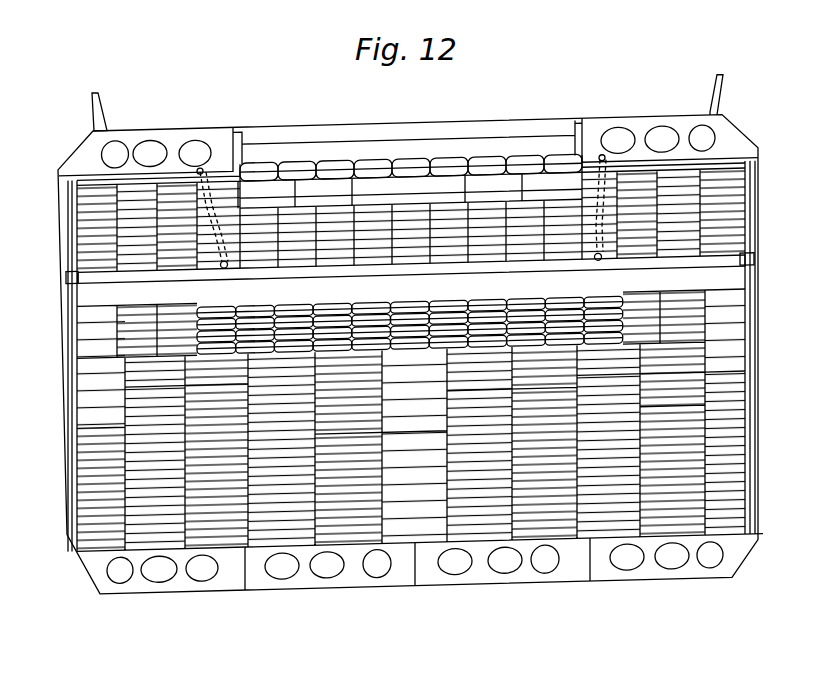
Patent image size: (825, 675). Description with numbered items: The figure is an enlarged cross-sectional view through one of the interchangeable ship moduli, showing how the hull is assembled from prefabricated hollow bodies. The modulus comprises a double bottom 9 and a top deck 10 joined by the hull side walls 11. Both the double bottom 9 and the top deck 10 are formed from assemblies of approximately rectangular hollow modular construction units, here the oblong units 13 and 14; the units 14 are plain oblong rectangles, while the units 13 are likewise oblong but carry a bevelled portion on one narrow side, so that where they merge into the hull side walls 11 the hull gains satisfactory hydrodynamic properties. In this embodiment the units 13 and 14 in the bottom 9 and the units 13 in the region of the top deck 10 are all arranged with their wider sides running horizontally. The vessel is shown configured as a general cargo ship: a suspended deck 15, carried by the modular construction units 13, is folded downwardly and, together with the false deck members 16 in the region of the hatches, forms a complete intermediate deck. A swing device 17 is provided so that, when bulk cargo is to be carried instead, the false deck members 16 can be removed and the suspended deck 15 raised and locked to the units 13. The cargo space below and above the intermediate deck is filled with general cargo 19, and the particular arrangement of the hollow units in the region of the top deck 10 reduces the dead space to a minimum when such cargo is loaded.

The double bottom 9 is at (265, 615).
The top deck 10 is at (149, 118).
The hull side walls 11 is at (68, 415).
The hollow modular construction unit 13 is at (88, 158).
The hollow modular construction unit 14 is at (352, 582).
The suspended deck 15 is at (90, 278).
The false deck members 16 is at (467, 268).
The swing device 17 is at (201, 167).
The general cargo 19 is at (738, 478).